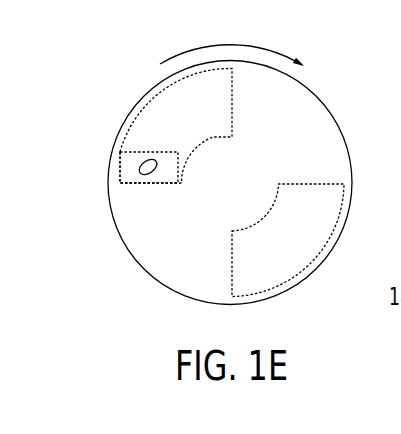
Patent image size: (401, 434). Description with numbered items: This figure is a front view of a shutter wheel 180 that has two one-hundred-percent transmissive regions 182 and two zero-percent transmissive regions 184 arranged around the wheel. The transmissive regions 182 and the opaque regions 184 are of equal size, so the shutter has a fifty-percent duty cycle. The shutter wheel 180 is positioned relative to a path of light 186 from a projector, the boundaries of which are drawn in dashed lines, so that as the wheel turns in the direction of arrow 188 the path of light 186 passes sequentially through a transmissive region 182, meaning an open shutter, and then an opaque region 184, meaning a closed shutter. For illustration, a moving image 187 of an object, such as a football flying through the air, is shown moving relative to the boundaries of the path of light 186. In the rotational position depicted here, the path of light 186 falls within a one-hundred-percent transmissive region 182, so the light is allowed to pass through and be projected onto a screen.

The shutter wheel 180 is at (225, 197).
The 100% transmissive region 182 is at (152, 124).
The 0% transmissive region 184 is at (301, 118).
The path of light 186 is at (155, 152).
The moving image 187 is at (154, 172).
The arrow 188 is at (192, 52).